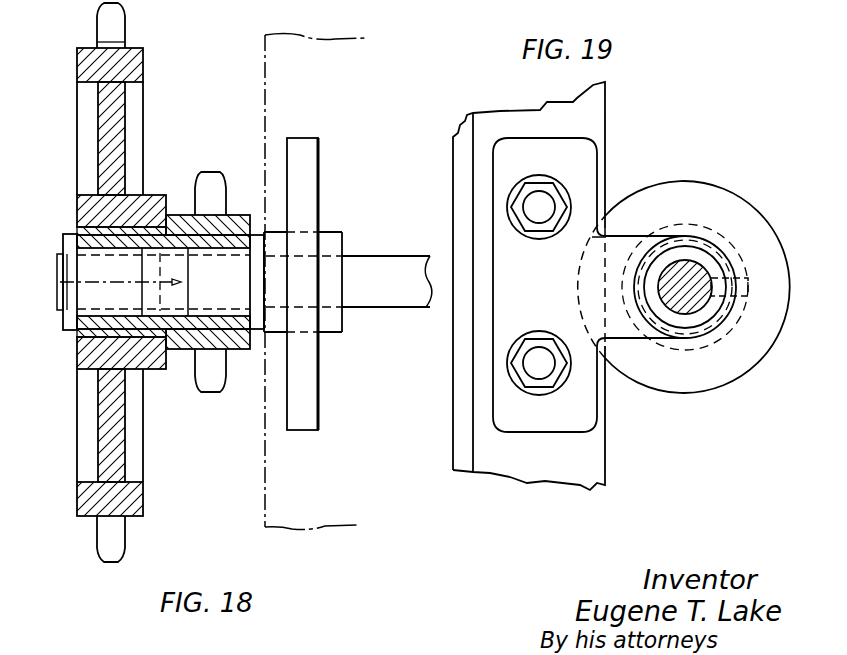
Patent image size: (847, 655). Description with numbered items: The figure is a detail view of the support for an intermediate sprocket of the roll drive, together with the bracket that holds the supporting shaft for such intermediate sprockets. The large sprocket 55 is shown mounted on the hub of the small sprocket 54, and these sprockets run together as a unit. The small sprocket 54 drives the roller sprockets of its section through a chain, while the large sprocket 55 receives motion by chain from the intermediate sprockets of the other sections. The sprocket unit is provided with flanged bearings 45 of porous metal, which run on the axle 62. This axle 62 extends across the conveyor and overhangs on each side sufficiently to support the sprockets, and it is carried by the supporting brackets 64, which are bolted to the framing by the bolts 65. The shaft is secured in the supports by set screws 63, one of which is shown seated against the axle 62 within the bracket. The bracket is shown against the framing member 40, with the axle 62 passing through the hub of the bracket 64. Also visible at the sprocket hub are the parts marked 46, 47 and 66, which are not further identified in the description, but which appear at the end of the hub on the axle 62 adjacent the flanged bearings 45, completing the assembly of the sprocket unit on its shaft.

In FIG. 18, the mounting plate 40 is at (265, 62).
In FIG. 19, the mounting plate 40 is at (463, 180).
In FIG. 18, the flanged bearings 45 is at (100, 323).
In FIG. 18, the bolt head 46 is at (63, 234).
In FIG. 18, the bolt 47 is at (257, 233).
In FIG. 18, the small sprocket 54 is at (212, 173).
In FIG. 18, the large sprocket 55 is at (143, 127).
In FIG. 18, the axle 62 is at (397, 308).
In FIG. 19, the axle 62 is at (683, 258).
In FIG. 19, the set screws 63 is at (748, 278).
In FIG. 18, the supporting brackets 64 is at (320, 188).
In FIG. 19, the supporting brackets 64 is at (599, 163).
In FIG. 19, the bolts 65 is at (570, 373).
In FIG. 18, the hub flange 66 is at (146, 212).